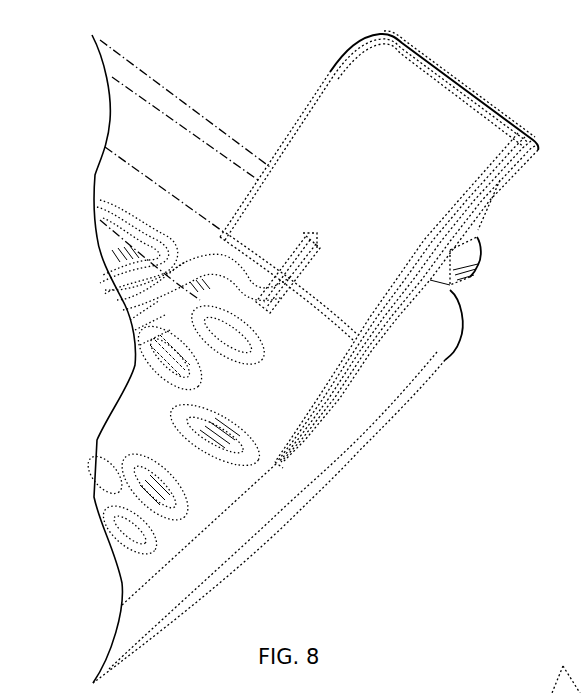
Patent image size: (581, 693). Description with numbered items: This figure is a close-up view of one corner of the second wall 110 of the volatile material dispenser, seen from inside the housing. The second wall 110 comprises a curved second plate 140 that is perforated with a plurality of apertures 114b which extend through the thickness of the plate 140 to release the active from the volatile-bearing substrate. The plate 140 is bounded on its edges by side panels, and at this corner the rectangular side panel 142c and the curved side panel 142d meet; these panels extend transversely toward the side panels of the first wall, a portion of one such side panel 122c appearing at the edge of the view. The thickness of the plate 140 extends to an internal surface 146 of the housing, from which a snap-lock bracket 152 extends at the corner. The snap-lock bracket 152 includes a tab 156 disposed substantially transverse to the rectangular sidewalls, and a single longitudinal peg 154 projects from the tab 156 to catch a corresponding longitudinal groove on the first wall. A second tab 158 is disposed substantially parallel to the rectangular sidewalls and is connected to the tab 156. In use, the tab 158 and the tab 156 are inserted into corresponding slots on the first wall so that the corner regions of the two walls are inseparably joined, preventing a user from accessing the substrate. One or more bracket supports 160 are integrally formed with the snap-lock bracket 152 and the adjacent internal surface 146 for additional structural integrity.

The second wall 110 is at (406, 488).
The apertures 114b is at (190, 428).
The side panel 122c is at (536, 692).
The curved second plate 140 is at (118, 185).
The side panel 142c is at (153, 132).
The side panel 142d is at (243, 518).
The internal surface 146 is at (110, 167).
The snap-lock bracket 152 is at (451, 59).
The longitudinal peg 154 is at (460, 280).
The tab 156 is at (490, 200).
The tab 158 is at (483, 100).
The bracket support 160 is at (305, 238).